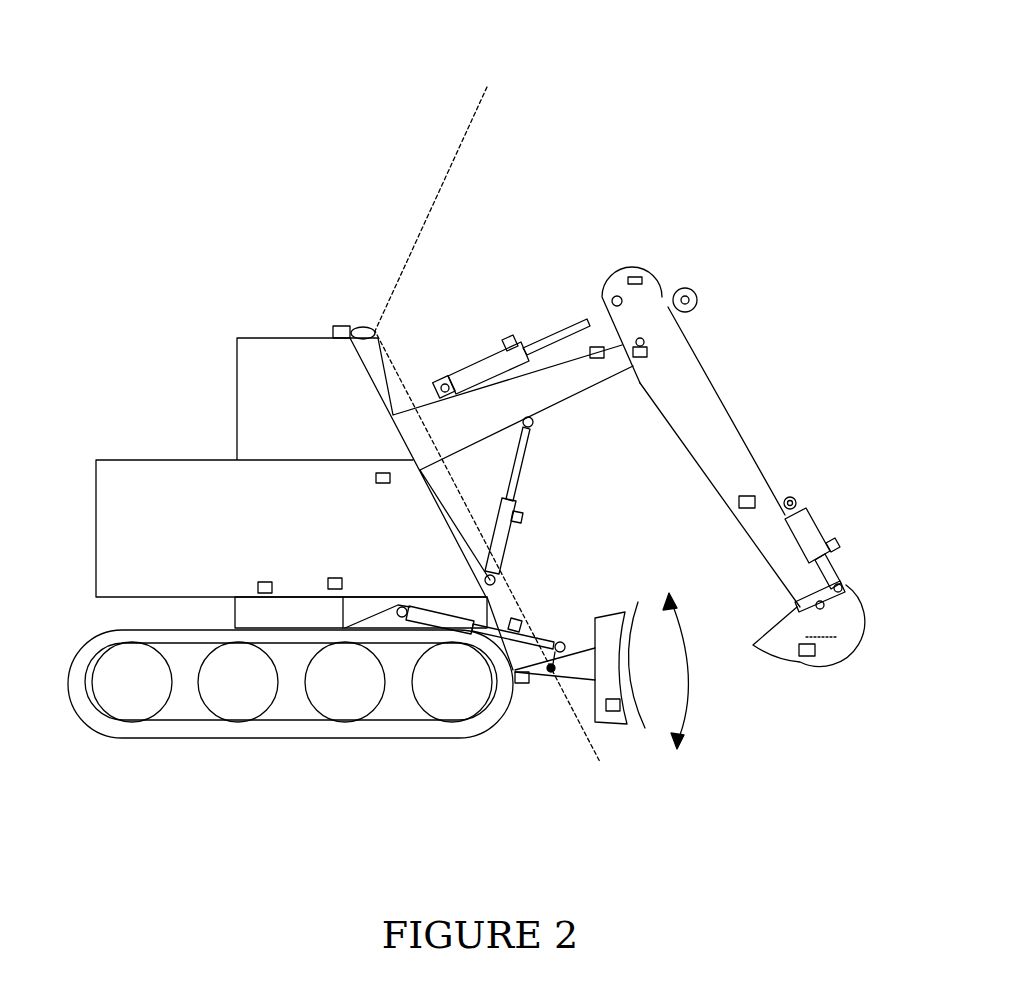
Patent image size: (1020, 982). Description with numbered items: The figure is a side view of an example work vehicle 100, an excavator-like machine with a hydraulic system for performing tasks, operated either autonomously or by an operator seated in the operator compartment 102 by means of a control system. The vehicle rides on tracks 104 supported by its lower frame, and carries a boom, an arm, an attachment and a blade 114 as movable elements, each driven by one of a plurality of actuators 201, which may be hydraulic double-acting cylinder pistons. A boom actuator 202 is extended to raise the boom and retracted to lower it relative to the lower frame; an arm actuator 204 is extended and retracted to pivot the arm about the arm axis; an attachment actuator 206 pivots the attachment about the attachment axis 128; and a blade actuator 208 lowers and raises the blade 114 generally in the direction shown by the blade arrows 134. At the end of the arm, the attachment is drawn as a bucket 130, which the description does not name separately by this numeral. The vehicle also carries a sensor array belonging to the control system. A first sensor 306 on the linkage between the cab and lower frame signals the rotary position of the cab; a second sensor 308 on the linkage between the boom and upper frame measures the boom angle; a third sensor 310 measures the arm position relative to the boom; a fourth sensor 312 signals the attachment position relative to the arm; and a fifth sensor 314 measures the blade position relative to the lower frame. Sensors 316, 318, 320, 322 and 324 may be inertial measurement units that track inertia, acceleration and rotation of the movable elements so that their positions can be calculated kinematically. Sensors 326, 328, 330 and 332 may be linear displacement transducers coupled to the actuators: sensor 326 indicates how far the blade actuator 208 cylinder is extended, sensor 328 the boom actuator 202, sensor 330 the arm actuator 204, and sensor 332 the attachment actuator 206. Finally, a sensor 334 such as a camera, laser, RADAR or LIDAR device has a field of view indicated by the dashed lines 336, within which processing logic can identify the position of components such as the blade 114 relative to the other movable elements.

The work vehicle 100 is at (217, 80).
The operator compartment 102 is at (234, 406).
The tracks 104 is at (120, 603).
The blade 114 is at (623, 612).
The attachment axis 128 is at (673, 290).
The bucket 130 is at (798, 612).
The blade arrows 134 is at (690, 688).
The actuators 201 is at (811, 504).
The boom actuator 202 is at (502, 553).
The arm actuator 204 is at (557, 327).
The attachment actuator 206 is at (822, 528).
The blade actuator 208 is at (560, 643).
The first sensor 306 is at (343, 578).
The second sensor 308 is at (390, 478).
The third sensor 310 is at (640, 377).
The fourth sensor 312 is at (847, 593).
The fifth sensor 314 is at (522, 690).
The sensor 316 is at (590, 347).
The sensor 318 is at (747, 510).
The sensor 320 is at (807, 657).
The sensor 322 is at (613, 711).
The sensor 324 is at (278, 583).
The sensor 326 is at (517, 618).
The sensor 328 is at (520, 520).
The sensor 330 is at (506, 340).
The sensor 332 is at (836, 543).
The sensor 334 is at (362, 320).
The dashed lines 336 is at (463, 137).